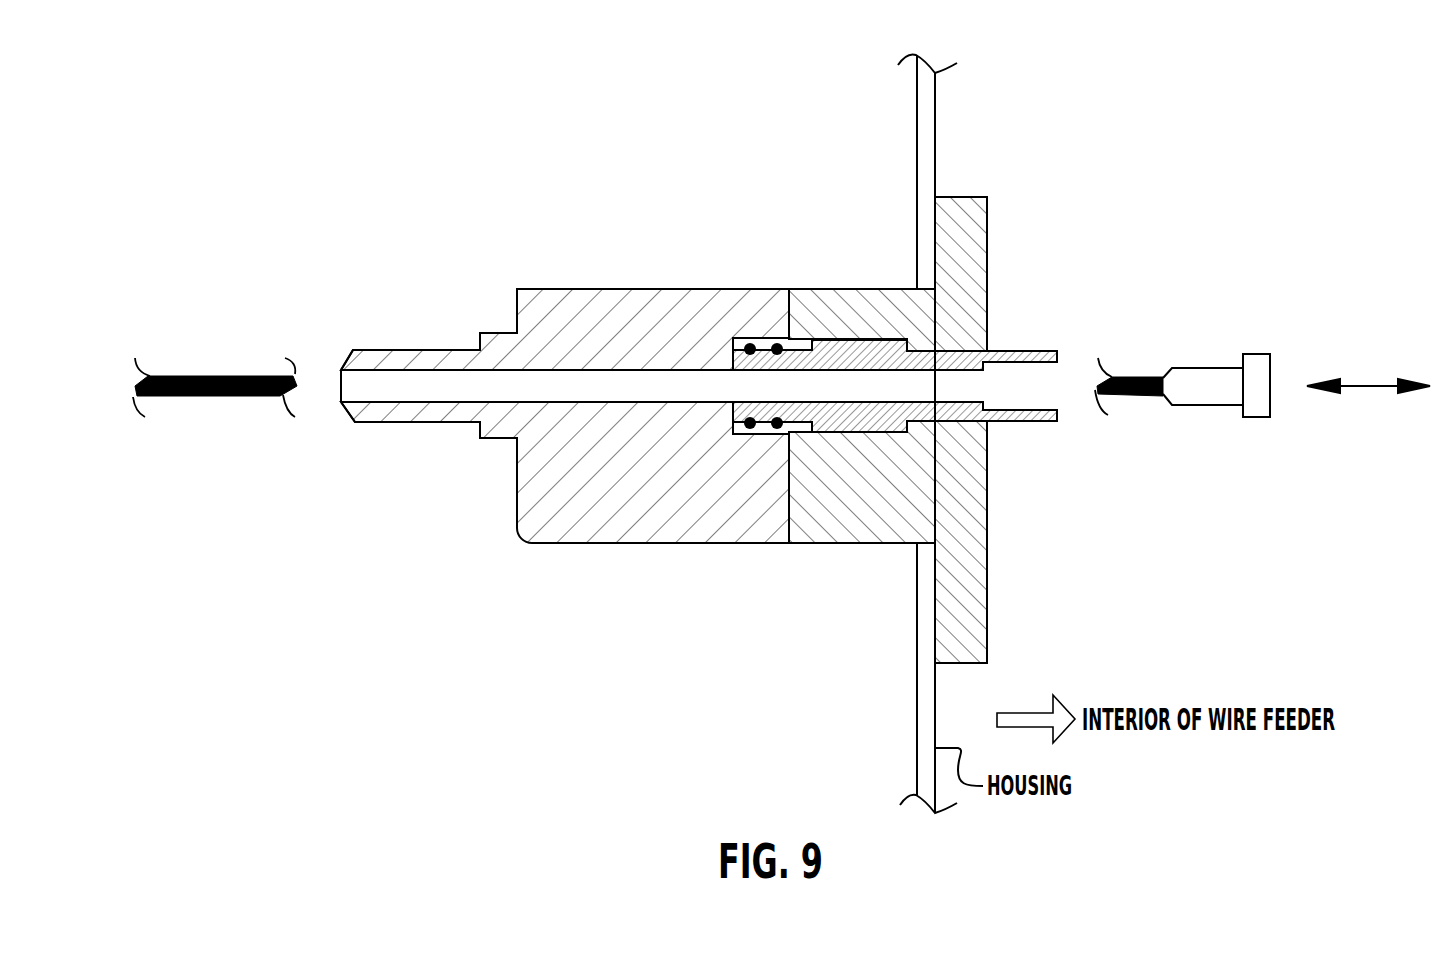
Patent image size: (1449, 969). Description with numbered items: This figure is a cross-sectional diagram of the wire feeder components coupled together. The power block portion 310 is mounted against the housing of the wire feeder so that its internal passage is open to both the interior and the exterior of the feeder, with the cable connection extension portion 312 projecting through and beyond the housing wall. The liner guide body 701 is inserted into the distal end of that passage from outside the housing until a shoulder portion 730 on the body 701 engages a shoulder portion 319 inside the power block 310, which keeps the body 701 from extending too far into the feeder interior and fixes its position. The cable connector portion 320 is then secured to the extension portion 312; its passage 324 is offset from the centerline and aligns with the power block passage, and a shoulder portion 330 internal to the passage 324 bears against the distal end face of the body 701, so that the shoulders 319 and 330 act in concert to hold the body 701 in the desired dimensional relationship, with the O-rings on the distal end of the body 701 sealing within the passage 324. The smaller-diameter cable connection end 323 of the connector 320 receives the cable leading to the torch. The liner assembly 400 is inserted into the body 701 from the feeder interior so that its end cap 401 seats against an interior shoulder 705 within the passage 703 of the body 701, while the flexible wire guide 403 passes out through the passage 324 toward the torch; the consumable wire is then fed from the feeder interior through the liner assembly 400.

The power block portion 310 is at (962, 197).
The cable connection extension portion 312 is at (855, 289).
The shoulder portion 319 is at (913, 343).
The cable connector portion 320 is at (566, 289).
The cable connection end 323 is at (398, 349).
The passage 324 is at (353, 387).
The shoulder portion 330 is at (733, 412).
The liner assembly 400 is at (1264, 424).
The end cap 401 is at (1256, 354).
The flexible wire guide 403 is at (204, 376).
The liner guide body 701 is at (1007, 351).
The passage 703 is at (1043, 397).
The interior shoulder 705 is at (983, 406).
The shoulder portion 730 is at (908, 421).